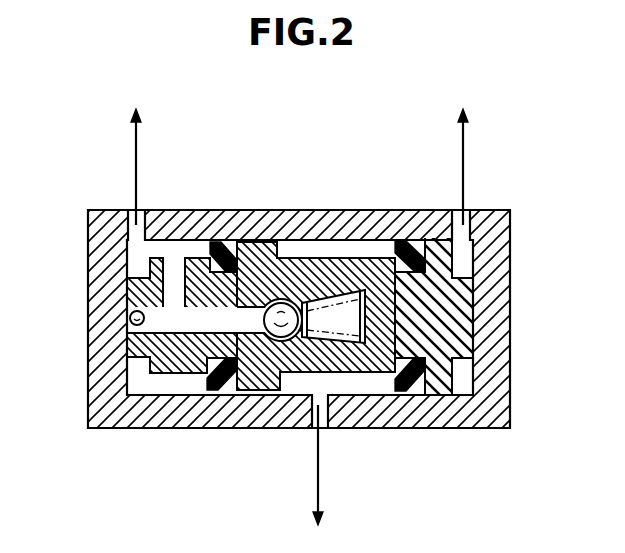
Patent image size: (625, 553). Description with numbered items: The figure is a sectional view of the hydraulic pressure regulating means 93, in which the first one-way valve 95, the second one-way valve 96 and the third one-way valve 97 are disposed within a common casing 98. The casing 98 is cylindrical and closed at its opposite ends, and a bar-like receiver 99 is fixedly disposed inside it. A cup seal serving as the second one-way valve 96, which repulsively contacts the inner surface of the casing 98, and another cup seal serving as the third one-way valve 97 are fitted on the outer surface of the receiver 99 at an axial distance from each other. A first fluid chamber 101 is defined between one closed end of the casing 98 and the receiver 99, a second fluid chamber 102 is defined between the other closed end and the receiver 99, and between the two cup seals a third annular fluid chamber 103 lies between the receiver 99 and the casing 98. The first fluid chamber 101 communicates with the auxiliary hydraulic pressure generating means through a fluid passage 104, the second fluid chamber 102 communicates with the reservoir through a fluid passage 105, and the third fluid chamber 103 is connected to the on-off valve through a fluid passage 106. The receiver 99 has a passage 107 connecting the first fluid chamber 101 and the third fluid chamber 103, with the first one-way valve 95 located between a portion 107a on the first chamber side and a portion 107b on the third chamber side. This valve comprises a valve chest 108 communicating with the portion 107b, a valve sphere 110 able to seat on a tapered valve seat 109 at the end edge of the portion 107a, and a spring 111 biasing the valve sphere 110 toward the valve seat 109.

The hydraulic pressure regulating means 93 is at (305, 180).
The first one-way valve 95 is at (400, 244).
The second one-way valve 96 is at (220, 240).
The third one-way valve 97 is at (428, 393).
The casing 98 is at (497, 327).
The receiver 99 is at (130, 290).
The first fluid chamber 101 is at (125, 383).
The second fluid chamber 102 is at (465, 372).
The third annular fluid chamber 103 is at (386, 242).
The fluid passage 104 is at (136, 168).
The fluid passage 105 is at (466, 170).
The fluid passage 106 is at (318, 466).
The passage 107 is at (265, 478).
The portion of passage on the side of the first fluid chamber 107a is at (178, 320).
The portion of passage on the side of the third fluid chamber 107b is at (275, 372).
The valve chest 108 is at (378, 318).
The tapered valve seat 109 is at (284, 303).
The valve sphere 110 is at (222, 378).
The spring 111 is at (358, 352).